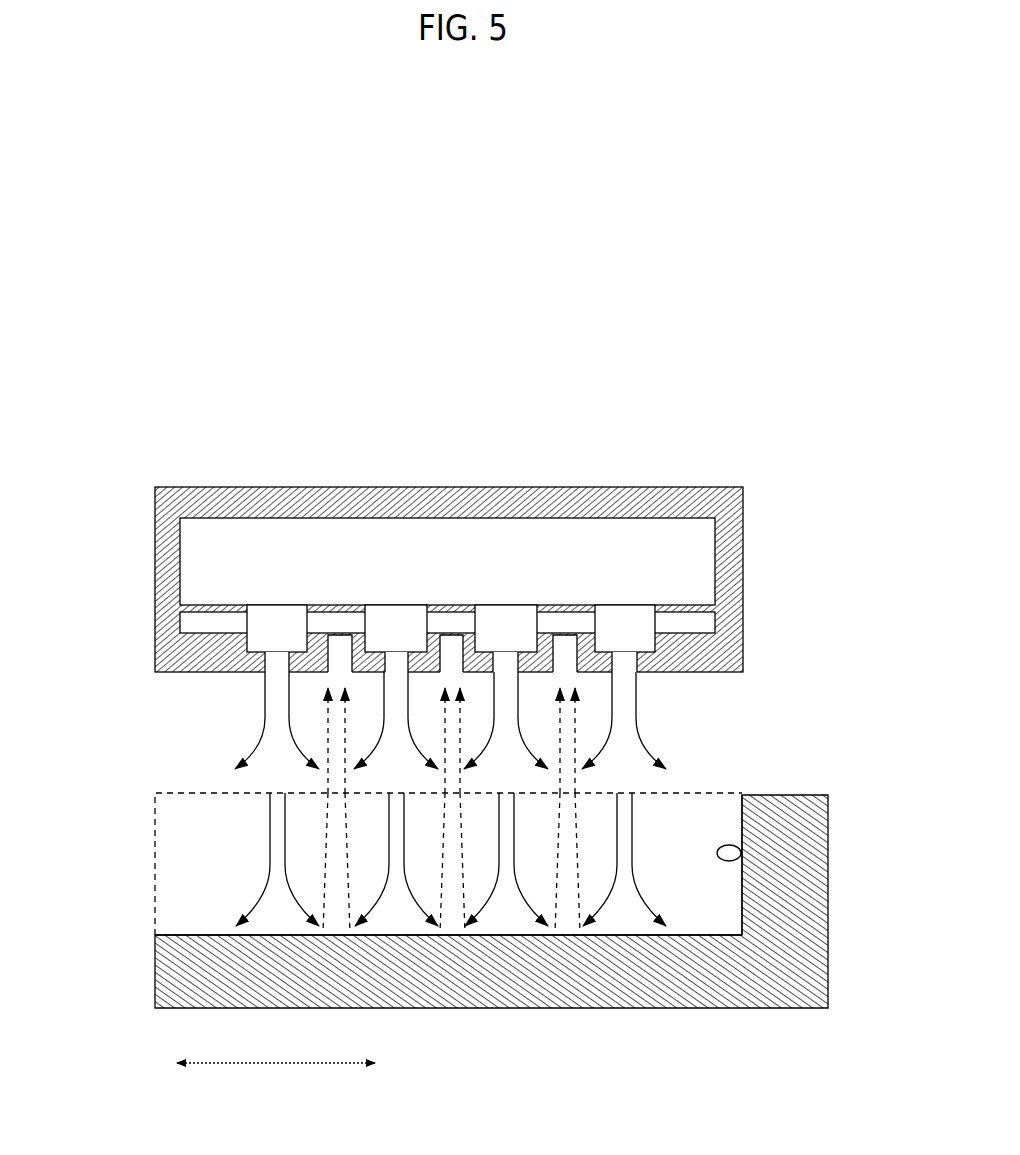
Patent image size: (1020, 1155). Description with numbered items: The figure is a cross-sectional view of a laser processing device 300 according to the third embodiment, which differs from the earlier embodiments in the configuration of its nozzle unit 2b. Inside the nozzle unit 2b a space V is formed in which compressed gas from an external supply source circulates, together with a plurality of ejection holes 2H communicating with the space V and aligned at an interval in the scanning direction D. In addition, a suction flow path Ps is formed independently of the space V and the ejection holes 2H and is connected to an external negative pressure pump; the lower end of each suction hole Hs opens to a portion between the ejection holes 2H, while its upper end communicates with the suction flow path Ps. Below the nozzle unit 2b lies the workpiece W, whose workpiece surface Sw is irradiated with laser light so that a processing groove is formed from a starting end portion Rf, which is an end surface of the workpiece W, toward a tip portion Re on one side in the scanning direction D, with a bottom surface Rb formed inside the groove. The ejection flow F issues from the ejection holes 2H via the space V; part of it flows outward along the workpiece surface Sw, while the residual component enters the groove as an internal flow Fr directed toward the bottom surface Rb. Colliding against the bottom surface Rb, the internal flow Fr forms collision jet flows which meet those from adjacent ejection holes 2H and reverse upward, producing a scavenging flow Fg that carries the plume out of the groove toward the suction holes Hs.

The laser processing device 300 is at (151, 350).
The nozzle unit 2b is at (141, 476).
The space V is at (232, 535).
The suction hole Hs is at (353, 652).
The suction flow path Ps is at (190, 622).
The ejection holes 2H is at (263, 672).
The ejection flow F is at (450, 720).
The scavenging flow Fg is at (436, 810).
The internal flow Fr is at (451, 859).
The workpiece surface Sw is at (793, 795).
The tip portion Re is at (735, 858).
The workpiece W is at (797, 947).
The bottom surface Rb is at (722, 935).
The starting end portion Rf is at (155, 932).
The scanning direction D is at (276, 1082).